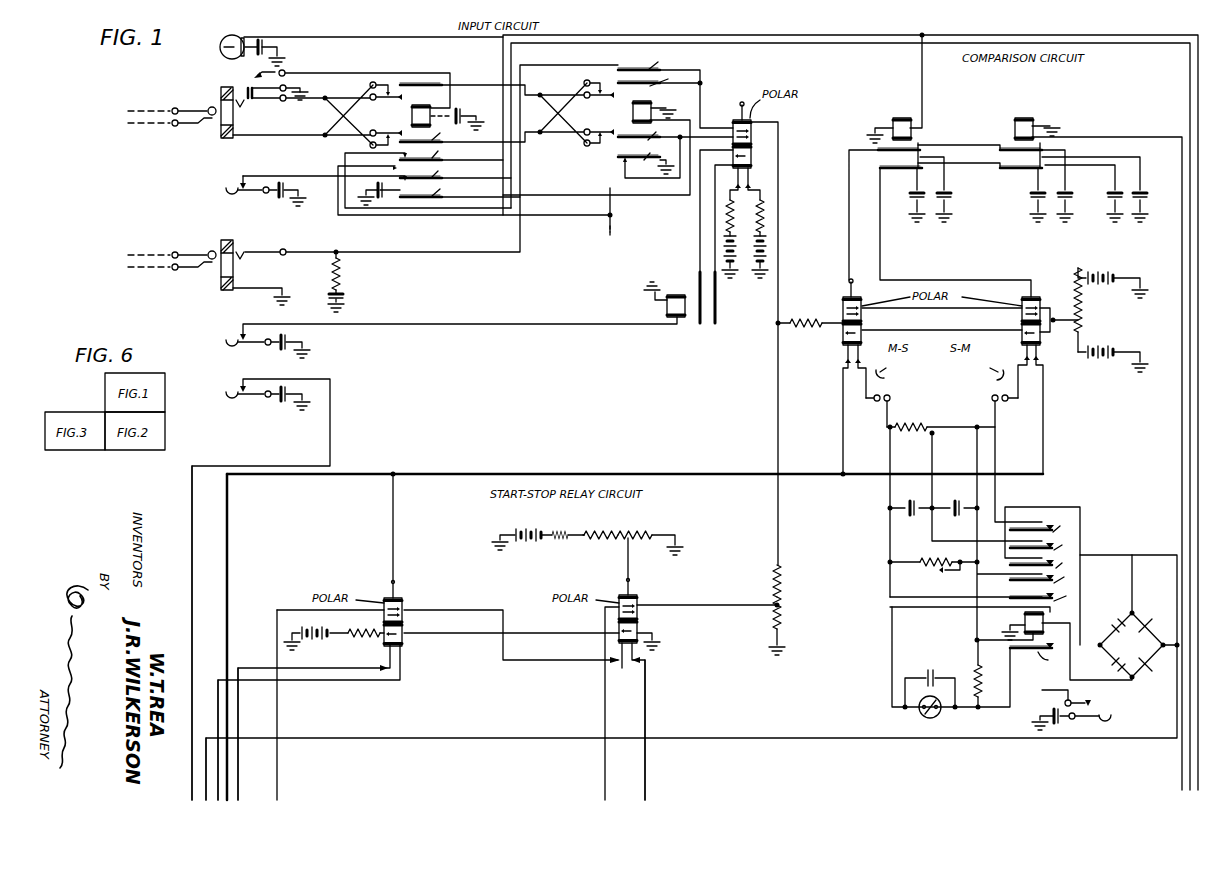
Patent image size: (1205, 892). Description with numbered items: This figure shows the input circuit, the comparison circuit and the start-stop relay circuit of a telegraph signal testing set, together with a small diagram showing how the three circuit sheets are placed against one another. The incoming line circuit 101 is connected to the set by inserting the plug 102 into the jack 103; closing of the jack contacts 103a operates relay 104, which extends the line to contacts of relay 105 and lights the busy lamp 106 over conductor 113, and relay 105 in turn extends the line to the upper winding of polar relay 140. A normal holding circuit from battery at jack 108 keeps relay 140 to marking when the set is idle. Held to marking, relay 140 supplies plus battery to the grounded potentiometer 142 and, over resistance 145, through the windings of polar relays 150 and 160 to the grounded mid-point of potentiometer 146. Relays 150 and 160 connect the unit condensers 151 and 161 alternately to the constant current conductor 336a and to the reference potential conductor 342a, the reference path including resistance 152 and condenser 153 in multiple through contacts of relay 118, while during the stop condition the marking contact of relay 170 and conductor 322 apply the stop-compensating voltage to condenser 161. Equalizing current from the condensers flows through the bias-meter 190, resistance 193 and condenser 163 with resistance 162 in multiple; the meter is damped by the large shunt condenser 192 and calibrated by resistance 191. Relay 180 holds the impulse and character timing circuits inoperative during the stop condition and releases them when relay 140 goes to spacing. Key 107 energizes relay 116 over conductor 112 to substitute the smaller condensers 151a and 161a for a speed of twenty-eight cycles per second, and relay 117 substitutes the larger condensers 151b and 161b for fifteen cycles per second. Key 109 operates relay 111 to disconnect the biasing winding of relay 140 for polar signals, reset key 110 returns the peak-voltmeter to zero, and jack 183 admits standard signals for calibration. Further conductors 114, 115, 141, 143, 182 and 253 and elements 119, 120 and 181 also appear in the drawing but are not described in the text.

The incoming line circuit 101 is at (157, 118).
The plug 102 is at (196, 114).
The jack 103 is at (243, 118).
The jack contacts 103a is at (285, 78).
The relay 104 is at (411, 114).
The relay 105 is at (632, 112).
The busy lamp 106 is at (221, 56).
The key 107 is at (242, 182).
The jack 108 is at (232, 246).
The key 109 is at (234, 348).
The reset key 110 is at (236, 402).
The relay 111 is at (666, 306).
The conductor 112 is at (800, 38).
The conductor 113 is at (802, 44).
The conductor 114 is at (1182, 406).
The conductor 115 is at (192, 520).
The relay 116 is at (896, 118).
The relay 117 is at (1022, 118).
The relay 118 is at (1024, 616).
The key contact 119 is at (1094, 714).
The rectifier bridge 120 is at (1134, 622).
The polar relay 140 is at (738, 118).
The conductor 141 is at (779, 146).
The potentiometer 142 is at (776, 590).
The conductor 143 is at (604, 772).
The resistance 145 is at (816, 318).
The potentiometer 146 is at (1080, 320).
The polar relay 150 is at (864, 310).
The unit condenser 151 is at (950, 198).
The condenser 151a is at (1072, 198).
The unit condenser 151b is at (1152, 200).
The resistance 152 is at (928, 422).
The condenser 153 is at (924, 500).
The polar relay 160 is at (1022, 310).
The unit condenser 161 is at (910, 198).
The condenser 161a is at (1030, 197).
The unit condenser 161b is at (1108, 200).
The resistance 162 is at (958, 424).
The condenser 163 is at (958, 500).
The polar relay 170 is at (406, 602).
The polar relay 180 is at (638, 602).
The potentiometer 181 is at (630, 535).
The conductor 182 is at (646, 772).
The jack 183 is at (279, 700).
The bias-meter 190 is at (920, 713).
The resistance 191 is at (926, 576).
The shunt condenser 192 is at (931, 668).
The resistance 193 is at (982, 706).
The conductor 253 is at (240, 772).
The conductor 322 is at (216, 698).
The constant current conductor 336a is at (596, 472).
The reference potential conductor 342a is at (1140, 555).